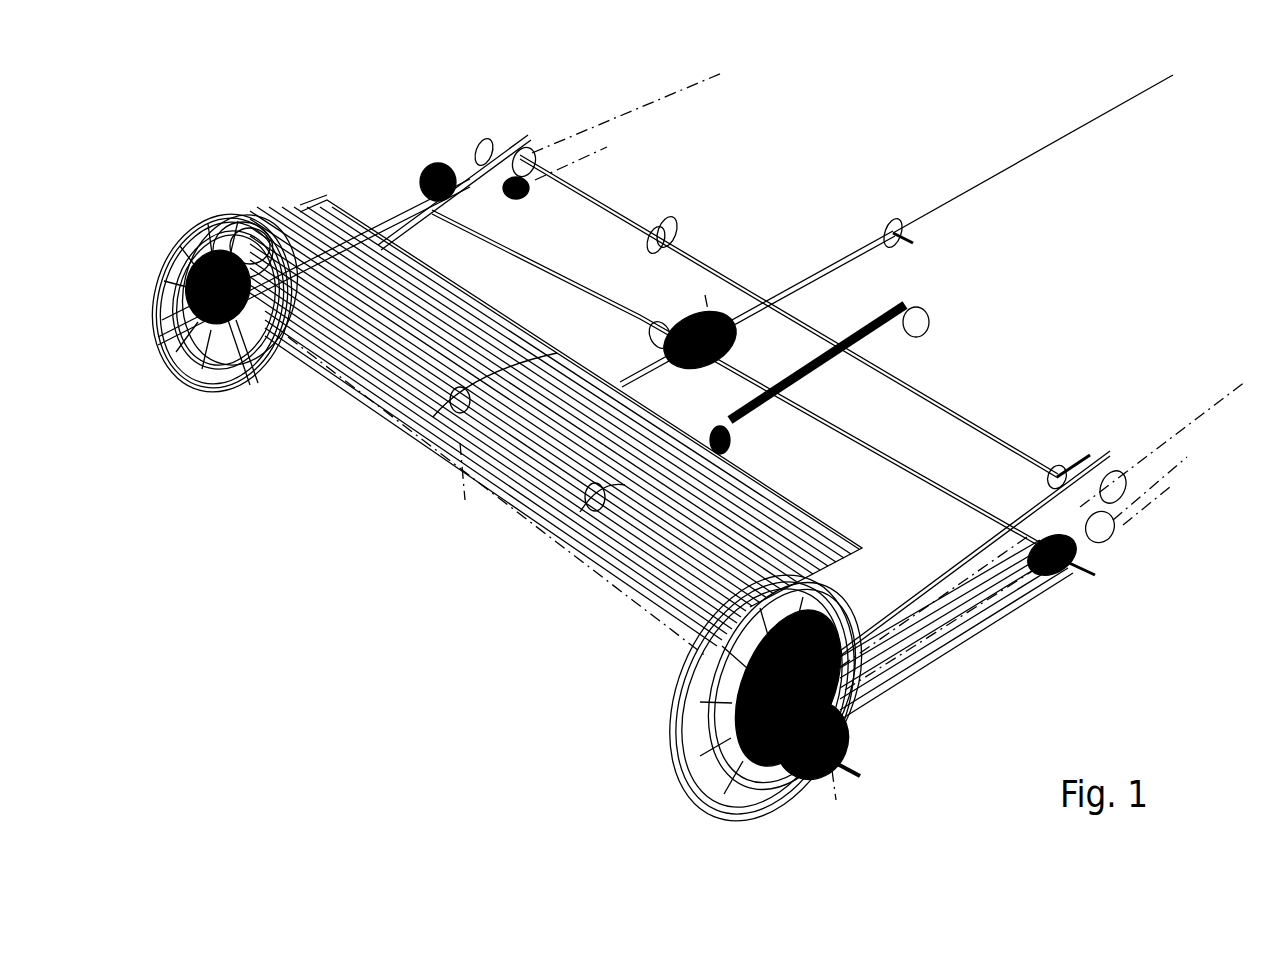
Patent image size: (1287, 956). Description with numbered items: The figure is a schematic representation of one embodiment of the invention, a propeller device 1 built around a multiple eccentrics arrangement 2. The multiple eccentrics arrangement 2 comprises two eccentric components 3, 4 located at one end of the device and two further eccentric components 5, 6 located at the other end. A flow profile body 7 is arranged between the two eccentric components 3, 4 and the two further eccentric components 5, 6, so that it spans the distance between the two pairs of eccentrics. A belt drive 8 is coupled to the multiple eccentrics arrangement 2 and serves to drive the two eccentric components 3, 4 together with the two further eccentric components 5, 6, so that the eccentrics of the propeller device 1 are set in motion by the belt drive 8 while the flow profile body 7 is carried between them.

The propeller device 1 is at (388, 660).
The multiple eccentrics arrangement 2 is at (175, 395).
The eccentric component 3 is at (193, 383).
The eccentric component 4 is at (265, 383).
The further eccentric component 5 is at (713, 673).
The further eccentric component 6 is at (678, 753).
The flow profile body 7 is at (533, 490).
The belt drive 8 is at (802, 273).